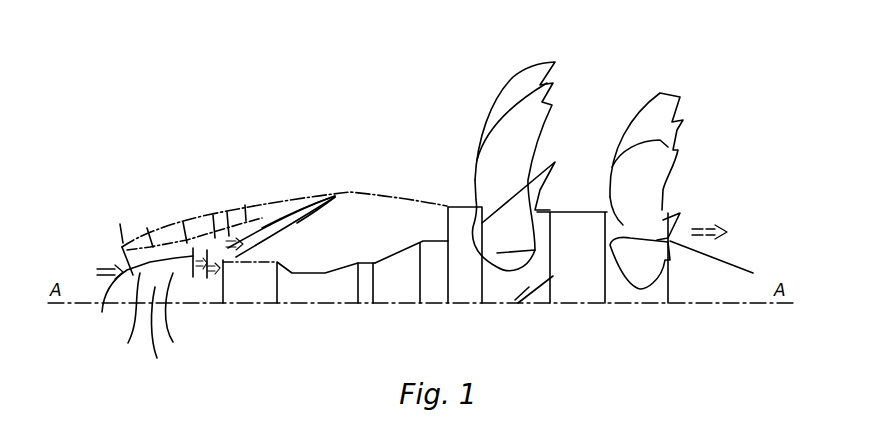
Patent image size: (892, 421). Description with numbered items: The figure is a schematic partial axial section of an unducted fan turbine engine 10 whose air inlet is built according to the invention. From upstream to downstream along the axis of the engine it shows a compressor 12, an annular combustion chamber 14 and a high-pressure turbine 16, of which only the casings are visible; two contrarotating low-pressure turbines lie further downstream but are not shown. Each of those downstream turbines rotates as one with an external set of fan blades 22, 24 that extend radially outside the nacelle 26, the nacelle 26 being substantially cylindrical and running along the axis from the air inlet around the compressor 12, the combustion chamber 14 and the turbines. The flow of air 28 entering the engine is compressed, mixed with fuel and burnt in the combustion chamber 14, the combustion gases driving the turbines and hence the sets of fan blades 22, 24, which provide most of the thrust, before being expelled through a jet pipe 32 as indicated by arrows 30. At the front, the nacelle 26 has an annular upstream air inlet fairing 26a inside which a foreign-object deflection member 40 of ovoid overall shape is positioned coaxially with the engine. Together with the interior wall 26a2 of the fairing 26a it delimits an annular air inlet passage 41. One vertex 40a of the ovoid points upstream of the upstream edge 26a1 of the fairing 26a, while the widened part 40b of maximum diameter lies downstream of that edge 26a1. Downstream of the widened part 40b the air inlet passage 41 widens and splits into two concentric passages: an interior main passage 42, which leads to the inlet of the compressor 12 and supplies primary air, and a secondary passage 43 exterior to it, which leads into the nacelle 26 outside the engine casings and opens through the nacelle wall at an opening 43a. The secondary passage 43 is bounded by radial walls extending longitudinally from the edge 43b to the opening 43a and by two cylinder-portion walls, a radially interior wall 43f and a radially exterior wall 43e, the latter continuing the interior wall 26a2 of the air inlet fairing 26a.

The unducted fan turbine engine 10 is at (421, 54).
The compressor 12 is at (266, 290).
The annular combustion chamber 14 is at (347, 293).
The high-pressure turbine 16 is at (435, 292).
The fan blades 22 is at (548, 60).
The fan blades 24 is at (677, 95).
The nacelle 26 is at (405, 197).
The air inlet fairing 26a is at (173, 222).
The upstream edge 26a1 is at (120, 247).
The interior wall 26a2 is at (157, 228).
The flow of air 28 is at (98, 272).
The arrows 30 is at (711, 247).
The jet pipe 32 is at (678, 213).
The foreign-object deflection member 40 is at (146, 332).
The vertex 40a is at (102, 312).
The widened part 40b is at (182, 313).
The air inlet passage 41 is at (125, 313).
The interior main passage 42 is at (225, 287).
The secondary passage 43 is at (290, 220).
The opening 43a is at (325, 196).
The edge 43b is at (215, 245).
The radially exterior wall 43e is at (258, 216).
The radially interior wall 43f is at (313, 212).